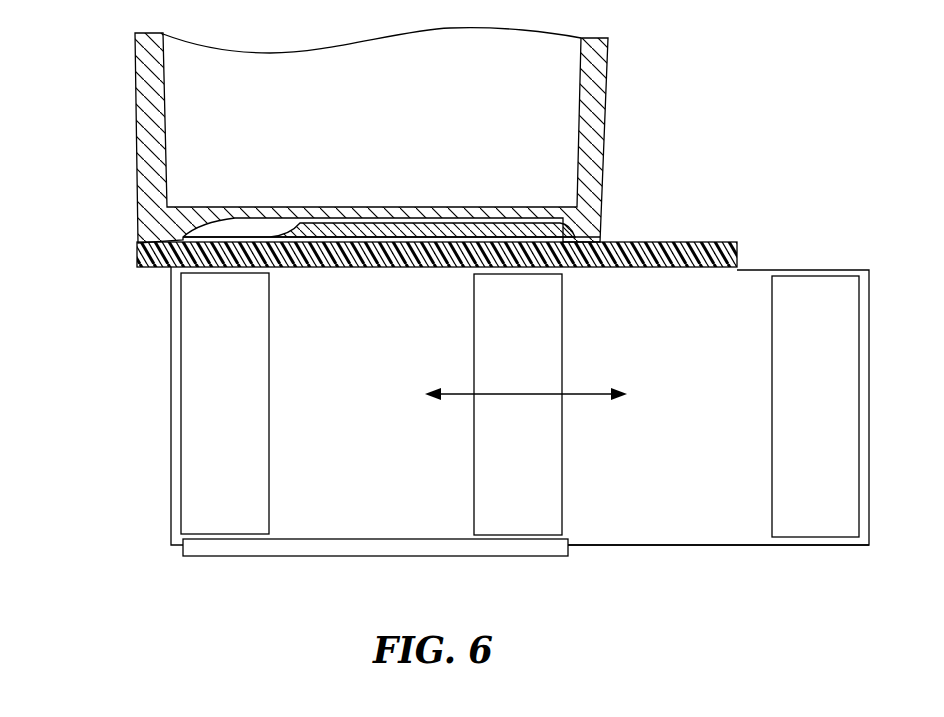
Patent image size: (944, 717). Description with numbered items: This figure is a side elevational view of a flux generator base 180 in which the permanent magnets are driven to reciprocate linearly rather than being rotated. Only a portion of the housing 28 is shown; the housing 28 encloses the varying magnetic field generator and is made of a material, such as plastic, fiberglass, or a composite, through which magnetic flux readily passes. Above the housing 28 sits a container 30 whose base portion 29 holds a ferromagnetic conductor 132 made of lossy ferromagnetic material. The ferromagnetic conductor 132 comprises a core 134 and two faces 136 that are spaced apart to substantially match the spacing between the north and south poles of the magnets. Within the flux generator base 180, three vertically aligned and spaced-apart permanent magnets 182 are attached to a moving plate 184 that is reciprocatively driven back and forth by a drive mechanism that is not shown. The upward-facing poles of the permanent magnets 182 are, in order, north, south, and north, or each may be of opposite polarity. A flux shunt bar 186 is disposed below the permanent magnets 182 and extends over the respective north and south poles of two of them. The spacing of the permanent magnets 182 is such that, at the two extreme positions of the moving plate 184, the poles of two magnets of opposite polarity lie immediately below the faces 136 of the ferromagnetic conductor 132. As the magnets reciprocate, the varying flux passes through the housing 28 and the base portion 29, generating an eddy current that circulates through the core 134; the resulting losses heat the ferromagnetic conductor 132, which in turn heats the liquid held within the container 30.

The housing 28 is at (740, 262).
The base portion 29 is at (600, 230).
The container 30 is at (684, 96).
The ferromagnetic conductor 132 is at (310, 177).
The core 134 is at (440, 210).
The faces 136 is at (182, 250).
The flux generator base 180 is at (213, 566).
The permanent magnets 182 is at (269, 438).
The moving plate 184 is at (775, 546).
The flux shunt bar 186 is at (565, 557).